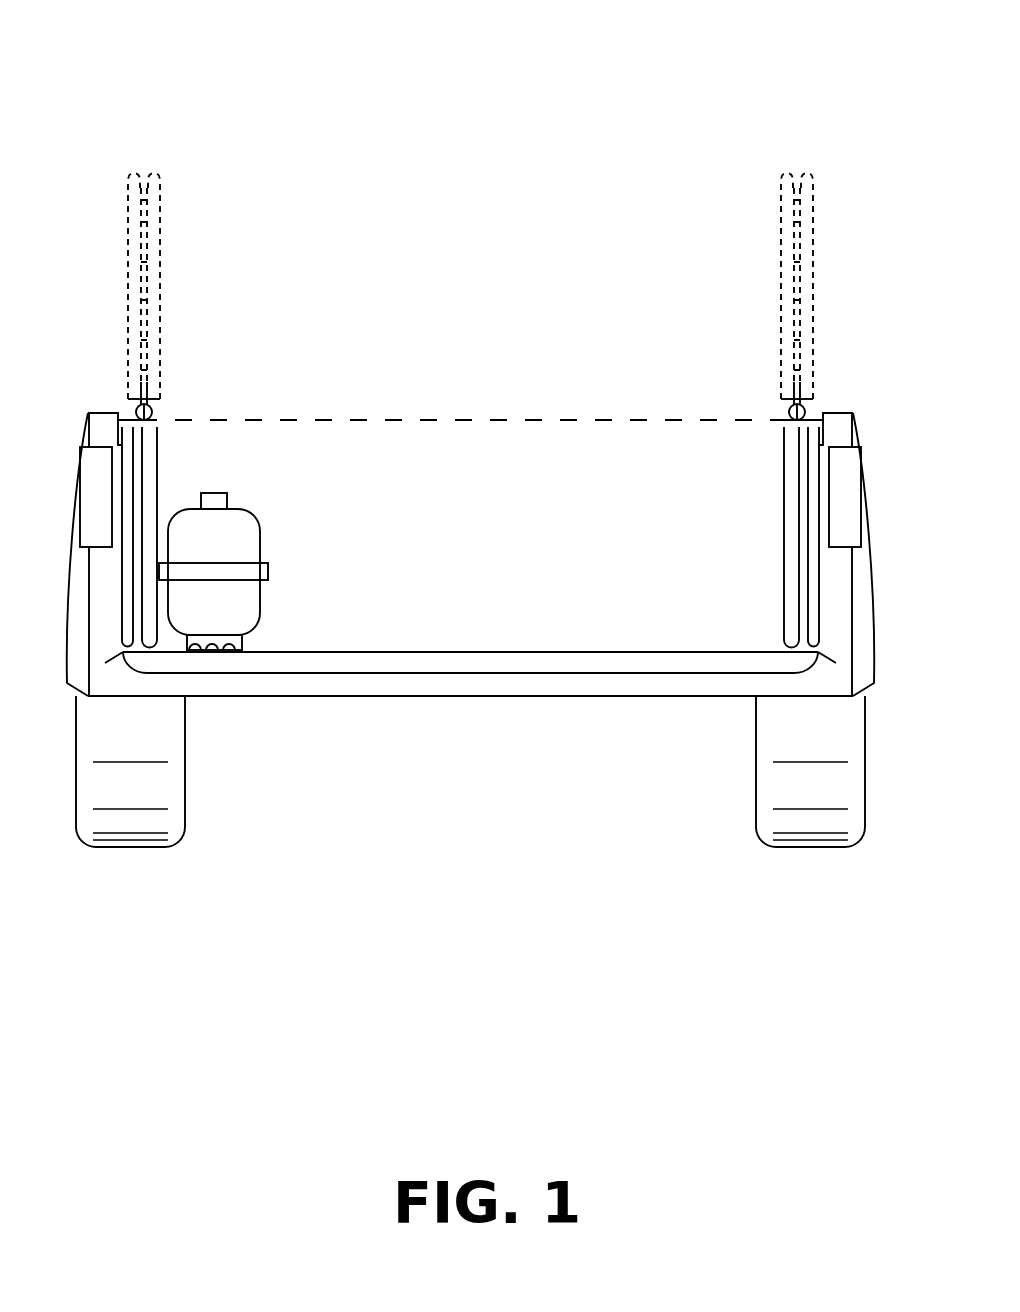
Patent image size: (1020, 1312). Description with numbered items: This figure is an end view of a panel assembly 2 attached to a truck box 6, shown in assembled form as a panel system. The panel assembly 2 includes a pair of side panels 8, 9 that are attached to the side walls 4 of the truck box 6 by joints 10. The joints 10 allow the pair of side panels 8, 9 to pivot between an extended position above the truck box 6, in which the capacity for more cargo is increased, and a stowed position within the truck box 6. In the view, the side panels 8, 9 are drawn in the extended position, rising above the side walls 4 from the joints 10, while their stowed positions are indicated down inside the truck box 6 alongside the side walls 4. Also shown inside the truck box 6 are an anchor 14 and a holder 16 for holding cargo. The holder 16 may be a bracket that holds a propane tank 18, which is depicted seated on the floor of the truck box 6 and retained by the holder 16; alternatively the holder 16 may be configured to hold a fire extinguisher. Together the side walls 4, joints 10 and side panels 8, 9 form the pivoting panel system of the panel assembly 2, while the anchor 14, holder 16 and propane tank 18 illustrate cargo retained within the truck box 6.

The panel assembly 2 is at (475, 118).
The side walls 4 is at (108, 413).
The truck box 6 is at (463, 488).
The side panel 8 is at (182, 303).
The side panel 9 is at (833, 272).
The joints 10 is at (157, 417).
The anchor 14 is at (159, 560).
The holder 16 is at (270, 573).
The propane tank 18 is at (242, 520).